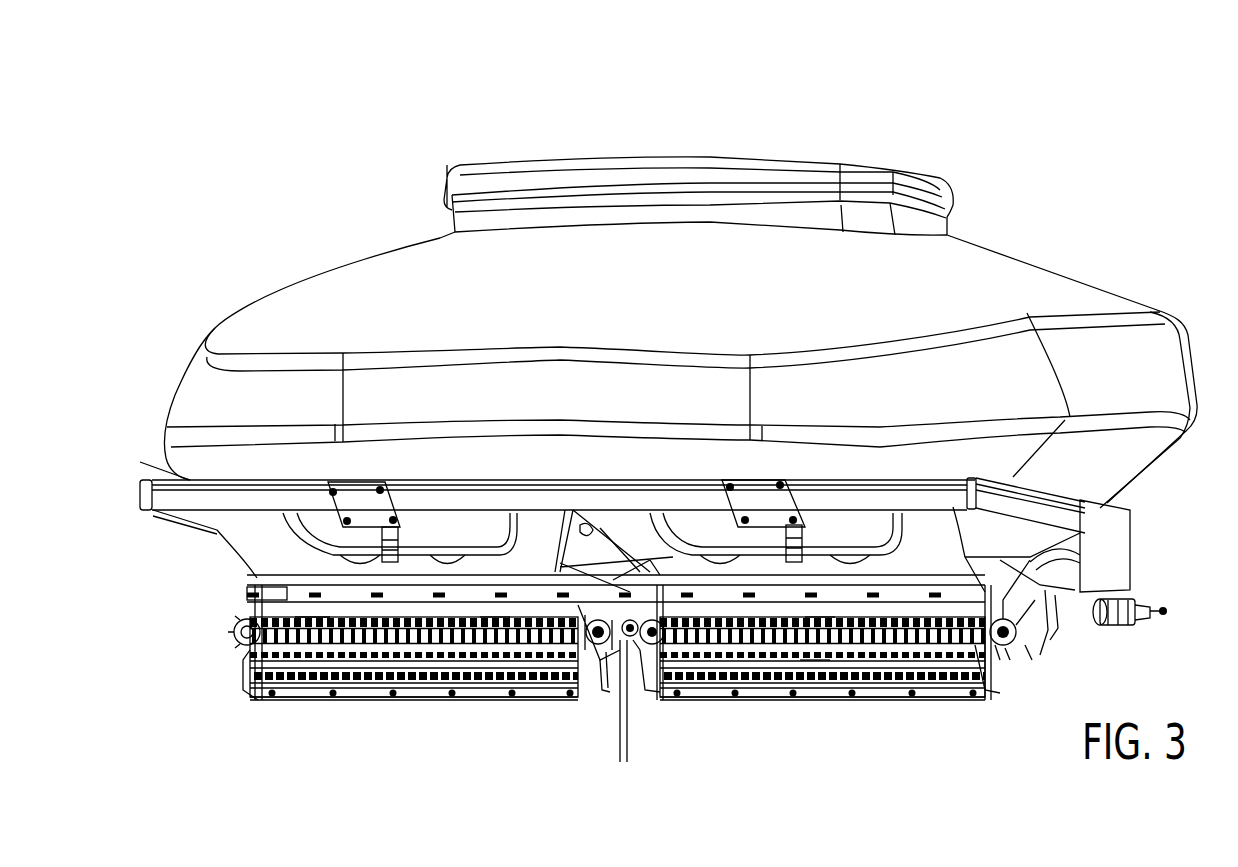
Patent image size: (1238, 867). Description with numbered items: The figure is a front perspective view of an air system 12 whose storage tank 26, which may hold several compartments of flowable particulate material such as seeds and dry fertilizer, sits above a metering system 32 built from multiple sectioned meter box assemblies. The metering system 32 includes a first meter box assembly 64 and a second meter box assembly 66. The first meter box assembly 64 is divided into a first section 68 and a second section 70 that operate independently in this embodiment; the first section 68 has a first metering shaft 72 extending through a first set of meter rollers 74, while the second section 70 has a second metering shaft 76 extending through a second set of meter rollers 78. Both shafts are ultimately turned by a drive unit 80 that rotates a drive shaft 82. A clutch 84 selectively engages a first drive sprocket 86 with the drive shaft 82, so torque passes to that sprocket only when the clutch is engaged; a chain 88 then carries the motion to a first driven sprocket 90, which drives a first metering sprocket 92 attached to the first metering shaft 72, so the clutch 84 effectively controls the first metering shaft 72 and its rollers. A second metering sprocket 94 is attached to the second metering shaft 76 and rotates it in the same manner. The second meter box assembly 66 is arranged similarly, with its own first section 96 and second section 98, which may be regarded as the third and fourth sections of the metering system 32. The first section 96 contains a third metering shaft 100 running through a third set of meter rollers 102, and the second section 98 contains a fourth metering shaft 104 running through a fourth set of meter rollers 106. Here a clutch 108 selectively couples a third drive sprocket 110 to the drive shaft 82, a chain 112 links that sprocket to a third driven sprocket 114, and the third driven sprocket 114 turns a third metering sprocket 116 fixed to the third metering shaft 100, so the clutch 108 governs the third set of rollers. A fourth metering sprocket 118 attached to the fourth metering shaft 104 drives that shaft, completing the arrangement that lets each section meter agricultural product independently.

The air system 12 is at (1097, 92).
The storage tank 26 is at (186, 371).
The metering system 32 is at (136, 548).
The first meter box assembly 64 is at (650, 688).
The second meter box assembly 66 is at (267, 707).
The first section 68 is at (935, 708).
The second section 70 is at (737, 712).
The first metering shaft 72 is at (820, 628).
The first set of meter rollers 74 is at (875, 690).
The second metering shaft 76 is at (807, 683).
The second set of meter rollers 78 is at (697, 690).
The drive unit 80 is at (1120, 620).
The drive shaft 82 is at (1030, 660).
The clutch 84 is at (1075, 588).
The first drive sprocket 86 is at (1042, 630).
The chain 88 is at (1083, 547).
The first driven sprocket 90 is at (1008, 660).
The first metering sprocket 92 is at (998, 660).
The second metering sprocket 94 is at (660, 670).
The first section 96 is at (533, 708).
The second section 98 is at (337, 712).
The third metering shaft 100 is at (417, 692).
The third set of meter rollers 102 is at (493, 625).
The fourth metering shaft 104 is at (413, 683).
The fourth set of meter rollers 106 is at (325, 625).
The clutch 108 is at (633, 650).
The third drive sprocket 110 is at (620, 716).
The chain 112 is at (567, 568).
The third driven sprocket 114 is at (606, 692).
The third metering sprocket 116 is at (609, 690).
The fourth metering sprocket 118 is at (266, 690).